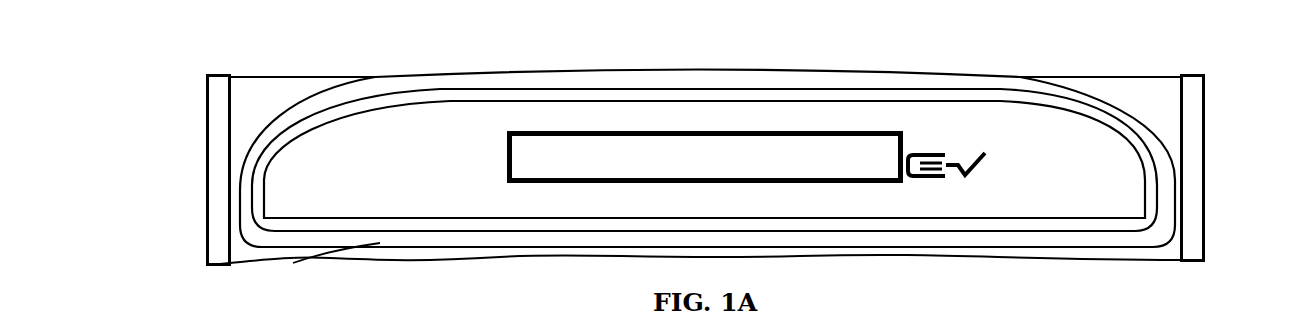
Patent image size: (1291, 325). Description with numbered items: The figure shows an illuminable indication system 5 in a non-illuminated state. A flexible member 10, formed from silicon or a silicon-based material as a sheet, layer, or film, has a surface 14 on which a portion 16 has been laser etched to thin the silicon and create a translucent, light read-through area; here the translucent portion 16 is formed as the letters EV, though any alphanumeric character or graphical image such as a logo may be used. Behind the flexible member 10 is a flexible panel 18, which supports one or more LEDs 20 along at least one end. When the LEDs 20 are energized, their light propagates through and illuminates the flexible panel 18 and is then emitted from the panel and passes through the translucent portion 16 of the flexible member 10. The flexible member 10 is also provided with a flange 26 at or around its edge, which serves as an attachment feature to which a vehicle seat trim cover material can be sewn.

The illuminable indication system 5 is at (883, 58).
The flexible member 10 is at (1074, 90).
The surface 14 is at (1110, 155).
The translucent portion 16 is at (914, 122).
The flexible panel 18 is at (282, 90).
The LEDs 20 is at (215, 170).
The flange 26 is at (1165, 197).